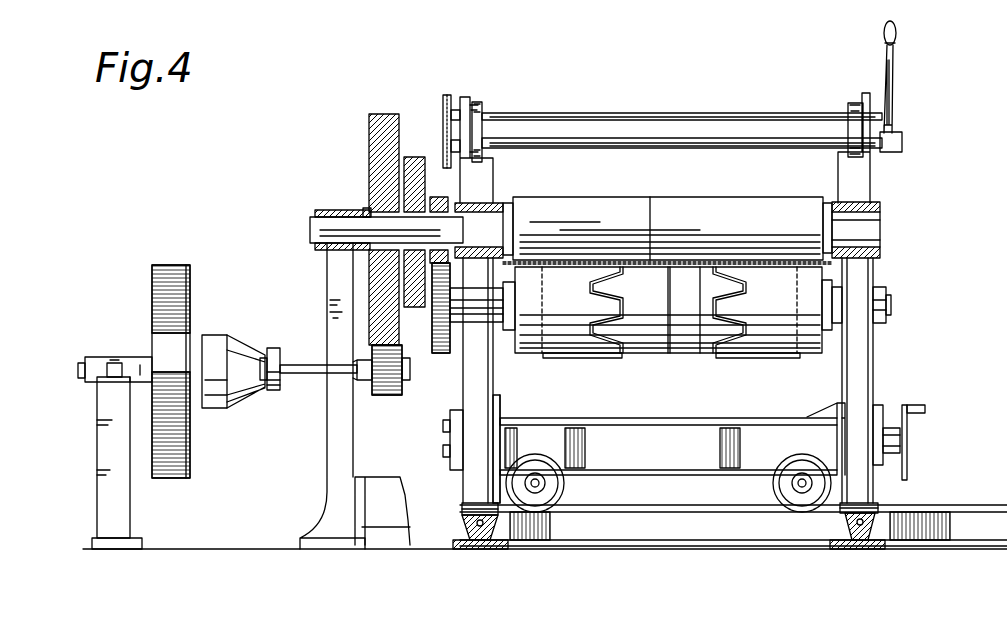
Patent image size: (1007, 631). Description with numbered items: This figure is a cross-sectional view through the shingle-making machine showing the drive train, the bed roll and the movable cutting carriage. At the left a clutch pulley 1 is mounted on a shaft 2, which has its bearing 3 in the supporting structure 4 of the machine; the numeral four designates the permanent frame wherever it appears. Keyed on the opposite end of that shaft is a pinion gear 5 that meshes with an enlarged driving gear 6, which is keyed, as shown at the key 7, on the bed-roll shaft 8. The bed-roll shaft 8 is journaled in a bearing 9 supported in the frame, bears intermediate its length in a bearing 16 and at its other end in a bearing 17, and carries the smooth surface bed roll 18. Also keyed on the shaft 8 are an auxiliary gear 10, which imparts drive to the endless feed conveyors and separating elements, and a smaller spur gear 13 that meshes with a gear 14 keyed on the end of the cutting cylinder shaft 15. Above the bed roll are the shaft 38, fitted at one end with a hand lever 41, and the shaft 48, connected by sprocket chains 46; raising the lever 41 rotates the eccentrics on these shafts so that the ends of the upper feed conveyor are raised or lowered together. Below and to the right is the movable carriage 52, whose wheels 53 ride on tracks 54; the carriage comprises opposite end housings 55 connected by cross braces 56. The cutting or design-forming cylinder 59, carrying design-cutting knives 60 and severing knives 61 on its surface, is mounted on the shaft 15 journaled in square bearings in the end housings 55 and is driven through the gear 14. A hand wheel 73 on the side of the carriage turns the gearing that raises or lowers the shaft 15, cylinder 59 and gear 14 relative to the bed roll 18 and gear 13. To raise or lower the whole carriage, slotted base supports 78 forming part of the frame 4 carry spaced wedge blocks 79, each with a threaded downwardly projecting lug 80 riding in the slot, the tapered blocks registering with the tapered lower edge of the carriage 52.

The clutch pulley 1 is at (190, 470).
The shaft 2 is at (215, 405).
The bearing 3 is at (280, 388).
The supporting structure 4 is at (482, 185).
The pinion gear 5 is at (398, 395).
The driving gear 6 is at (390, 116).
The key 7 is at (375, 210).
The bed-roll shaft 8 is at (312, 232).
The bearing 9 is at (325, 210).
The auxiliary gear 10 is at (414, 157).
The spur gear 13 is at (438, 197).
The gear 14 is at (445, 353).
The cutting cylinder shaft 15 is at (470, 330).
The bearing 16 is at (515, 200).
The bearing 17 is at (882, 205).
The bed roll 18 is at (720, 200).
The shaft 38 is at (640, 148).
The hand lever 41 is at (893, 90).
The sprocket chains 46 is at (447, 95).
The shaft 48 is at (680, 113).
The movable carriage 52 is at (886, 364).
The wheels 53 is at (565, 485).
The tracks 54 is at (960, 510).
The end housings 55 is at (500, 392).
The cross braces 56 is at (680, 430).
The cutting cylinder 59 is at (800, 353).
The design-cutting knives 60 is at (740, 353).
The severing knives 61 is at (668, 345).
The hand wheel 73 is at (908, 475).
The base supports 78 is at (492, 540).
The wedge blocks 79 is at (470, 505).
The lug 80 is at (468, 549).